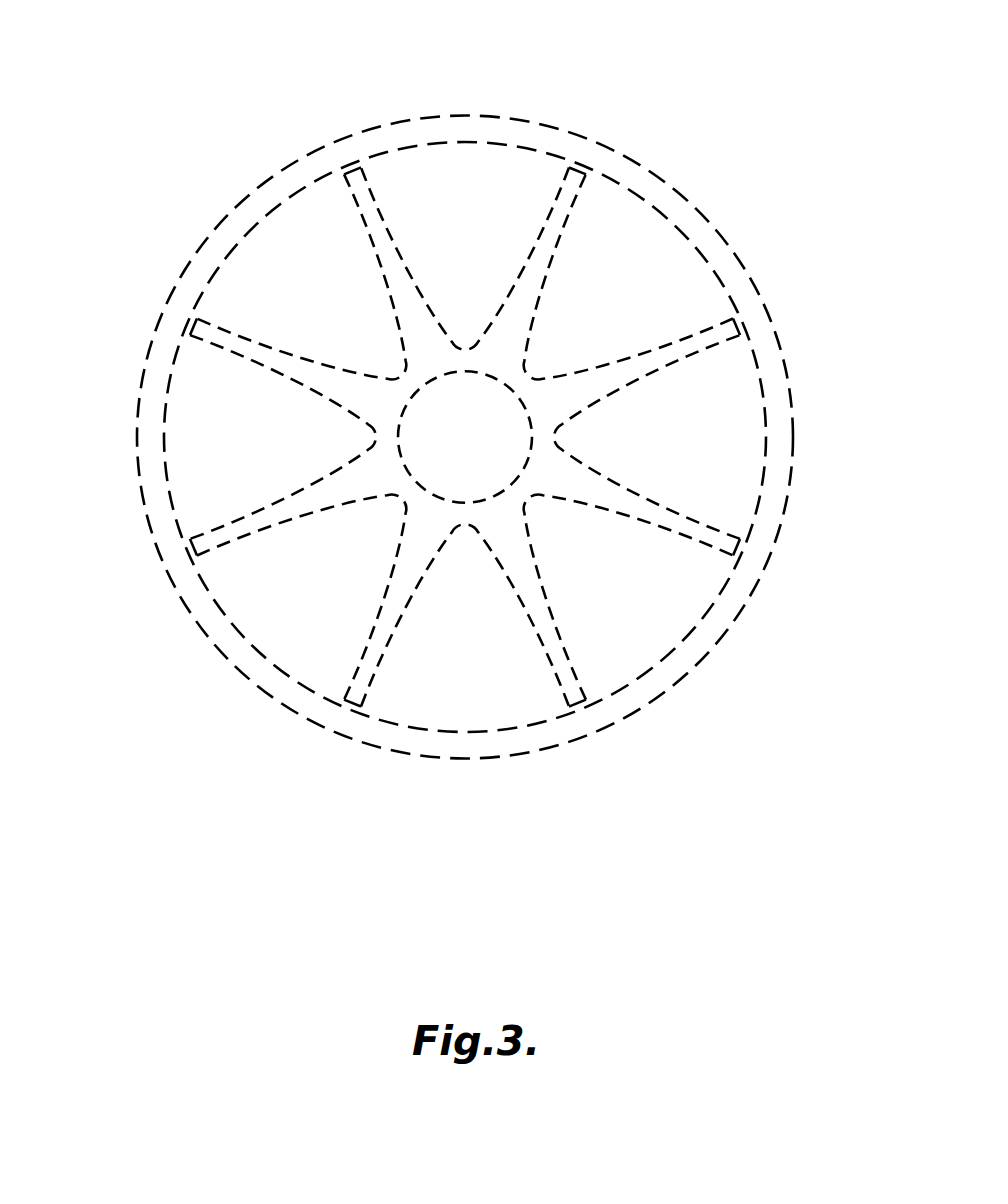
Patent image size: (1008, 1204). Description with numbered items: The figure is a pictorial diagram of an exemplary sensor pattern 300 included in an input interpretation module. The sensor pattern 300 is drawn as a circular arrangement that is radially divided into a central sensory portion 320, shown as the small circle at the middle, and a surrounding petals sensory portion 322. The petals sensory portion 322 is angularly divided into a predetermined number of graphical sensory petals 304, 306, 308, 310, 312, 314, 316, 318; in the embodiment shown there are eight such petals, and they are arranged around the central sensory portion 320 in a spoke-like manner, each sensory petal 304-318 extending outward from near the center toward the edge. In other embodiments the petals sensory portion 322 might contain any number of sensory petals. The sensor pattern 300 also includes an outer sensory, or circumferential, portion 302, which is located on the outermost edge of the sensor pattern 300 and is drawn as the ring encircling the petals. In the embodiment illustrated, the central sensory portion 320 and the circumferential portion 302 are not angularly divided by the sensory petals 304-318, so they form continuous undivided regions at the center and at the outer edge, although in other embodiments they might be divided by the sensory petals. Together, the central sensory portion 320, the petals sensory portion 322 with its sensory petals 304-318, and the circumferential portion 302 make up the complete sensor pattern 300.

The sensor pattern 300 is at (852, 344).
The outer sensory portion 302 is at (672, 193).
The sensory petal 304 is at (500, 167).
The sensory petal 306 is at (670, 262).
The sensory petal 308 is at (740, 465).
The sensory petal 310 is at (665, 610).
The sensory petal 312 is at (522, 710).
The sensory petal 314 is at (285, 633).
The sensory petal 316 is at (185, 452).
The sensory petal 318 is at (247, 260).
The central sensory portion 320 is at (465, 436).
The petals sensory portion 322 is at (748, 372).